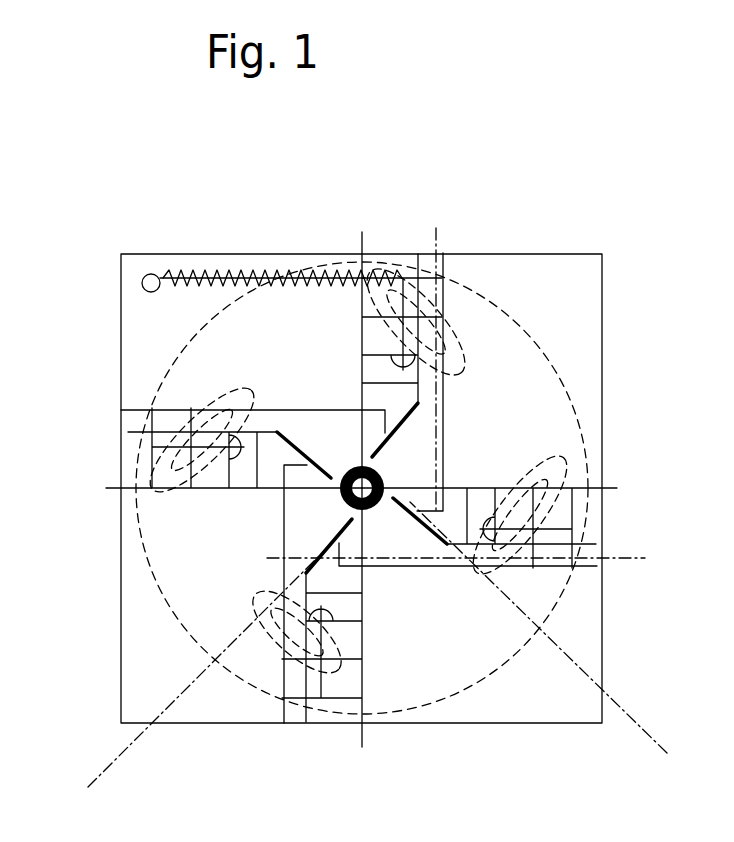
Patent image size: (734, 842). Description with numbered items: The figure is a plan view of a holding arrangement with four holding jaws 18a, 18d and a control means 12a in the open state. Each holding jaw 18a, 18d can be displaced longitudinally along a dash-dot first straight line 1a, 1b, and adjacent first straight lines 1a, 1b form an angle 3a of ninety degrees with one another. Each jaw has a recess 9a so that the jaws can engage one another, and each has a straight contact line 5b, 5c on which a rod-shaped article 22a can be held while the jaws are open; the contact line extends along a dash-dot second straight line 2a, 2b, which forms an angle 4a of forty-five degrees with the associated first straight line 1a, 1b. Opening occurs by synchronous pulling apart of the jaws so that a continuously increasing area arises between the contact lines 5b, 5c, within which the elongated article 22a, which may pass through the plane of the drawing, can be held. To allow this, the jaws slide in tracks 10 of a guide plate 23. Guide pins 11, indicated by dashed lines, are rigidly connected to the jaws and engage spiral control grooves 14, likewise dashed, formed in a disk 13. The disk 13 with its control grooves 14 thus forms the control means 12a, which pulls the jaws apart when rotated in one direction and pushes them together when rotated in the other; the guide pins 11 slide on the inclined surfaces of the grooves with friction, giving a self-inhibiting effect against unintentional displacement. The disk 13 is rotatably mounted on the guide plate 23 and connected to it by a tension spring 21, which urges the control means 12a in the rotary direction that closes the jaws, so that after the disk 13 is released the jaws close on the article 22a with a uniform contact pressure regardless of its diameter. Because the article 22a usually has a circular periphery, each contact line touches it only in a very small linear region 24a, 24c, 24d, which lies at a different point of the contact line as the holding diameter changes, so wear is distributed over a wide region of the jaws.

The first straight line 1a is at (437, 351).
The first straight line 1b is at (472, 557).
The second straight line 2a is at (554, 636).
The second straight line 2b is at (190, 685).
The angle 3a is at (418, 522).
The angle 4a is at (388, 540).
The contact line 5b is at (318, 555).
The contact line 5c is at (270, 459).
The recess 9a is at (398, 397).
The track 10 is at (598, 500).
The guide pin 11 is at (110, 422).
The control means 12a is at (585, 651).
The disk 13 is at (558, 605).
The spiral control groove 14 is at (115, 514).
The holding jaw 18a is at (444, 408).
The holding jaw 18d is at (342, 410).
The tension spring 21 is at (190, 272).
The article 22a is at (345, 471).
The guide plate 23 is at (203, 707).
The linear region 24a is at (383, 467).
The linear region 24c is at (330, 510).
The linear region 24d is at (350, 460).